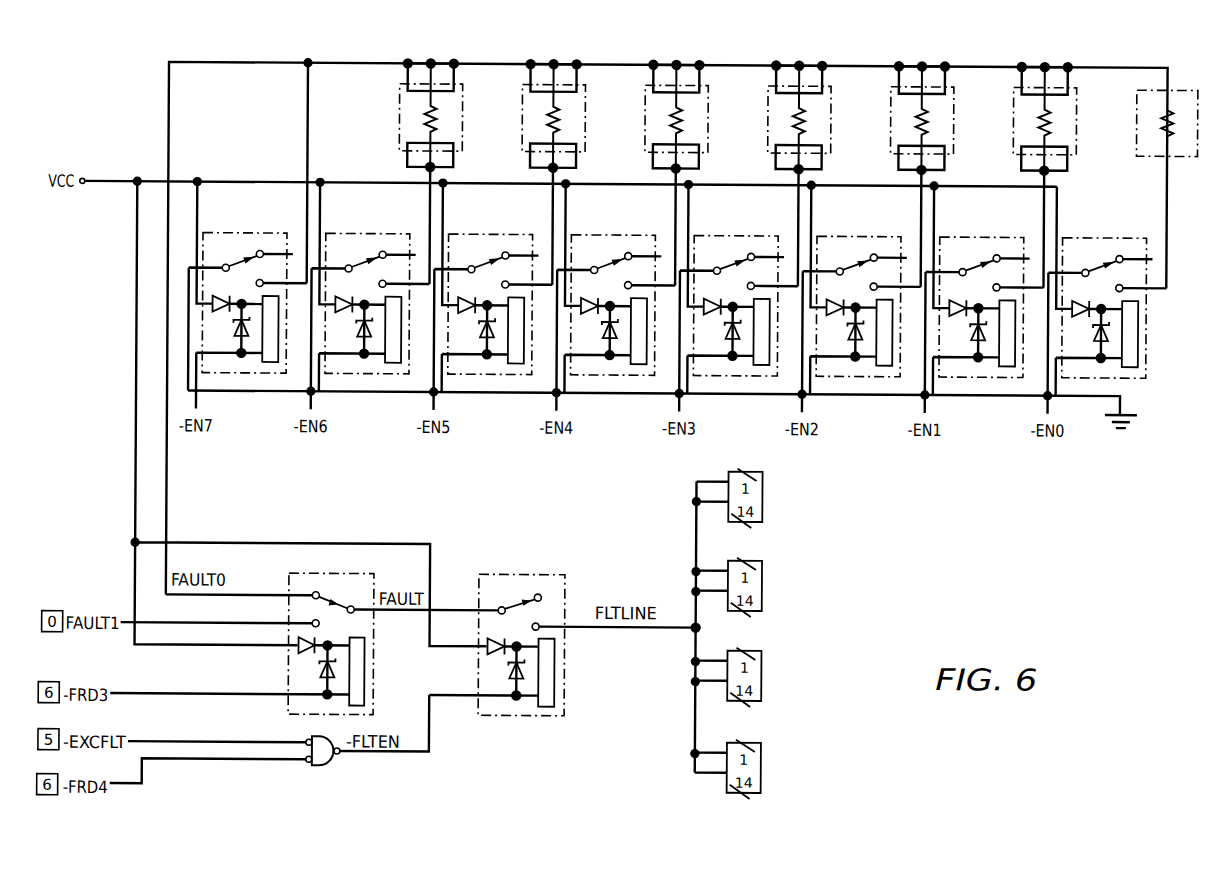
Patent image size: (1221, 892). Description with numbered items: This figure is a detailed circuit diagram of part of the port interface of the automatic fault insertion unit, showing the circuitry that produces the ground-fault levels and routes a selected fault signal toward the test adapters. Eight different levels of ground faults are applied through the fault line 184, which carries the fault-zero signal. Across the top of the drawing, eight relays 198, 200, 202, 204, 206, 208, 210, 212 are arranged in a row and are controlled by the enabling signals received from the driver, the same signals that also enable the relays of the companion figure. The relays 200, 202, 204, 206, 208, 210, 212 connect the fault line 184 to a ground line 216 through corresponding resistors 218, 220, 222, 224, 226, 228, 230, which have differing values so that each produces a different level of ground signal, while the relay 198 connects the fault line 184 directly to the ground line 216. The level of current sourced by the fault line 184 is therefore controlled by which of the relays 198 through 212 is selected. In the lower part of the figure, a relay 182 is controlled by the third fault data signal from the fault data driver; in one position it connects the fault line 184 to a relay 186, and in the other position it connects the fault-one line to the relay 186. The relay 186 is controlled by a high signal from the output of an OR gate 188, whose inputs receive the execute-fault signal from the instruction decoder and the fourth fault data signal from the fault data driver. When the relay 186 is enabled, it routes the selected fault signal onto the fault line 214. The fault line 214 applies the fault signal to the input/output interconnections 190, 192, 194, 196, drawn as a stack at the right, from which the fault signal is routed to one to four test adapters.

The relay 182 is at (376, 668).
The fault line 184 is at (1125, 64).
The relay 186 is at (564, 669).
The OR gate 188 is at (333, 769).
The input/output interconnection 190 is at (764, 493).
The input/output interconnection 192 is at (764, 582).
The input/output interconnection 194 is at (764, 672).
The input/output interconnection 196 is at (764, 764).
The relay 198 is at (246, 235).
The relay 200 is at (369, 235).
The relay 202 is at (492, 235).
The relay 204 is at (614, 235).
The relay 206 is at (737, 235).
The relay 208 is at (860, 235).
The relay 210 is at (983, 235).
The relay 212 is at (1106, 235).
The fault line 214 is at (644, 630).
The ground line 216 is at (991, 396).
The resistor 218 is at (401, 118).
The resistor 220 is at (524, 118).
The resistor 222 is at (646, 118).
The resistor 224 is at (769, 118).
The resistor 226 is at (892, 118).
The resistor 228 is at (1015, 118).
The resistor 230 is at (1137, 118).